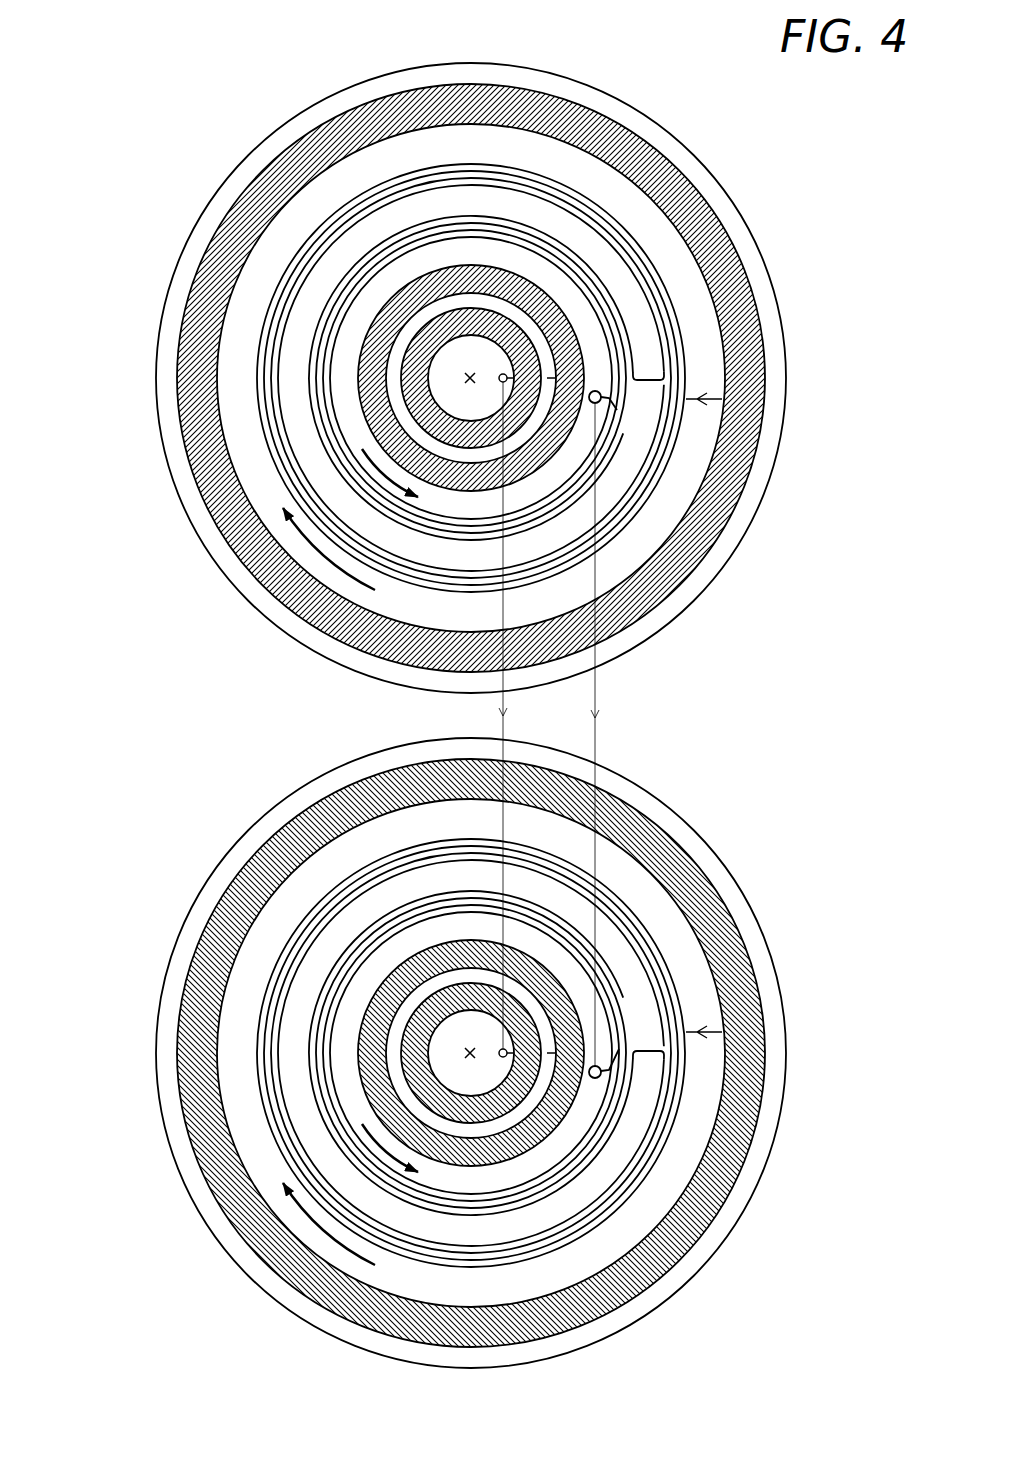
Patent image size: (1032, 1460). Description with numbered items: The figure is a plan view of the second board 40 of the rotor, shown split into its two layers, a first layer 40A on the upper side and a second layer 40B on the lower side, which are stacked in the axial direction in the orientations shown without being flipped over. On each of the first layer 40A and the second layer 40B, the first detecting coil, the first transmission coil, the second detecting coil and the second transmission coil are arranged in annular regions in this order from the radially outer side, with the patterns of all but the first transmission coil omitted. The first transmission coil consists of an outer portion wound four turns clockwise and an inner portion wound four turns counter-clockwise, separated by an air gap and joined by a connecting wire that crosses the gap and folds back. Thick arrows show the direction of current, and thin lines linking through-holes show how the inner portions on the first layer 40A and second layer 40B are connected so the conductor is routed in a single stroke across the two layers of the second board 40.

The second board 40 is at (109, 107).
The first layer 40A is at (200, 167).
The second layer 40B is at (200, 857).